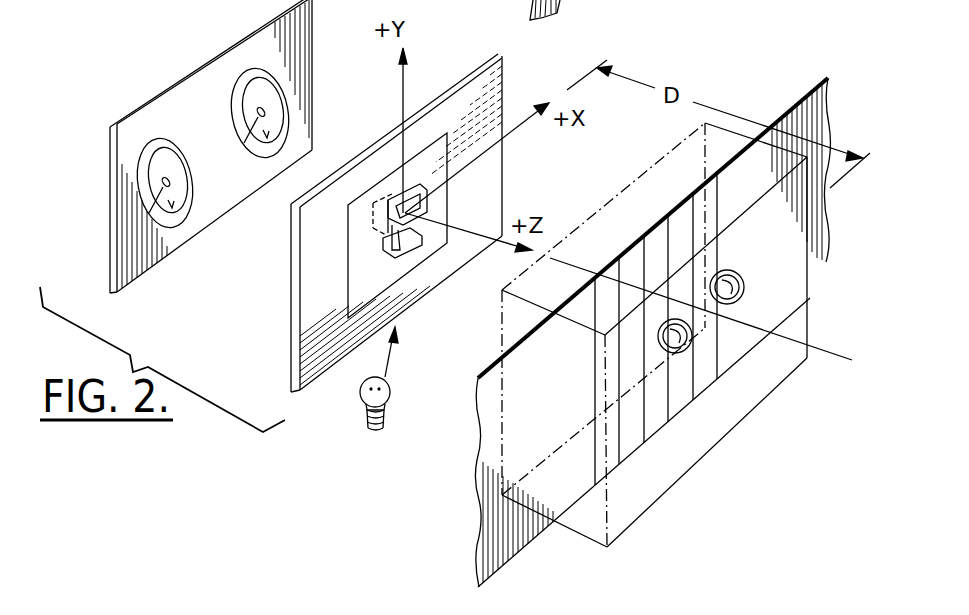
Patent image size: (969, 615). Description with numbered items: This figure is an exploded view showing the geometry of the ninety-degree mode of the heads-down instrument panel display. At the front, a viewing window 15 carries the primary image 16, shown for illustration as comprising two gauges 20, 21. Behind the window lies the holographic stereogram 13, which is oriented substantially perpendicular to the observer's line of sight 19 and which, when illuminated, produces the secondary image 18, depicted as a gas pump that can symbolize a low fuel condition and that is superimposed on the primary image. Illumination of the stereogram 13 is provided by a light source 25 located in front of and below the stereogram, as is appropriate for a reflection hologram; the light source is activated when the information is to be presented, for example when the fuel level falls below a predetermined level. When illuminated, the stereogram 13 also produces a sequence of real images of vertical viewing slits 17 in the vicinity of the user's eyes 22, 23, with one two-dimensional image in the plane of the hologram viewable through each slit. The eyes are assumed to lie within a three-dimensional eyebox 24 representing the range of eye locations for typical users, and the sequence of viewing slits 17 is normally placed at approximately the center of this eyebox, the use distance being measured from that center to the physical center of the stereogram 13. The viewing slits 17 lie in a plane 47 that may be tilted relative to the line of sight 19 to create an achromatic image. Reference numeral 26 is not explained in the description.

The holographic stereogram 13 is at (362, 243).
The viewing window 15 is at (480, 87).
The primary image 16 is at (182, 82).
The vertical viewing slits 17 is at (657, 240).
The secondary image 18 is at (408, 238).
The line of sight 19 is at (823, 353).
The gauge 20 is at (139, 183).
The gauge 21 is at (287, 107).
The user's eye 22 is at (744, 290).
The user's eye 23 is at (680, 352).
The eyebox 24 is at (677, 479).
The light source 25 is at (360, 405).
The fiber ends 26 is at (541, 608).
The plane containing viewing slits 47 is at (513, 533).